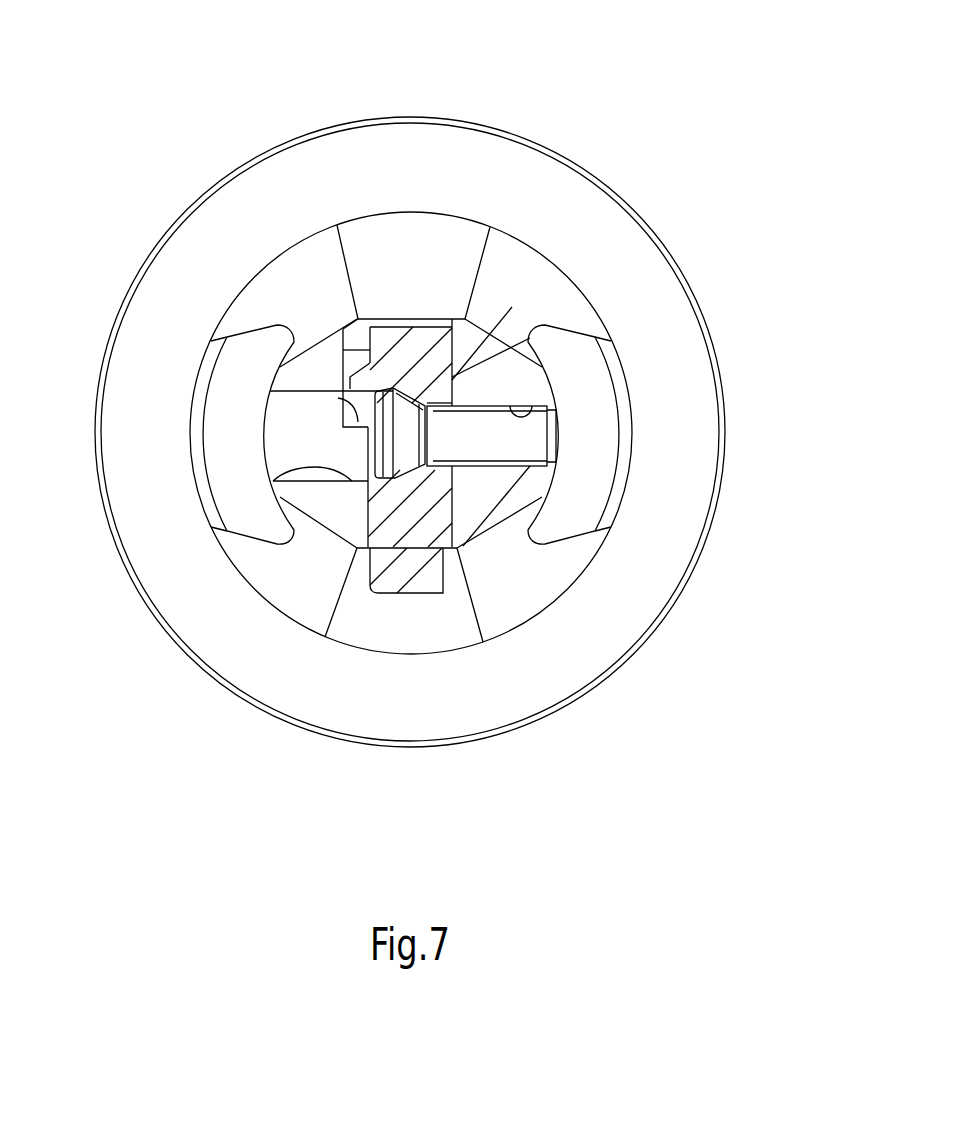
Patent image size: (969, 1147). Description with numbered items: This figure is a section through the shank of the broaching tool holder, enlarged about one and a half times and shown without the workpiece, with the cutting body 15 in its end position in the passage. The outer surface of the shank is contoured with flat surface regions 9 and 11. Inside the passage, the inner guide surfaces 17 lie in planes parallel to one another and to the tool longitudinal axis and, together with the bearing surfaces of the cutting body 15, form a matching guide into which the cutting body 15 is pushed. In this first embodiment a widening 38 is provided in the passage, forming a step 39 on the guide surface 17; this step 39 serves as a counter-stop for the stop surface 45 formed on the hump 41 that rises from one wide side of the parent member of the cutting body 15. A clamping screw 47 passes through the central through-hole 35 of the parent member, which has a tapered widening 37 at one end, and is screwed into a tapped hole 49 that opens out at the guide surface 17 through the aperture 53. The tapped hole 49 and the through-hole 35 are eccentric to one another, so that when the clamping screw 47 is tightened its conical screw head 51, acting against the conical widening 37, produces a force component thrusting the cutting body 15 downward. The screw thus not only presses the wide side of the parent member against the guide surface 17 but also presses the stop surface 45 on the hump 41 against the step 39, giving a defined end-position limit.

The flat surface region 9 is at (445, 265).
The flat surface region 11 is at (327, 333).
The cutting body 15 is at (415, 520).
The guide surface 17 is at (286, 542).
The through-hole 35 is at (596, 337).
The tapered widening 37 is at (417, 333).
The widening 38 is at (348, 375).
The step 39 is at (368, 440).
The hump 41 is at (346, 378).
The stop surface 45 is at (340, 396).
The clamping screw 47 is at (463, 430).
The tapped hole 49 is at (560, 417).
The screw head 51 is at (390, 545).
The aperture 53 is at (273, 481).